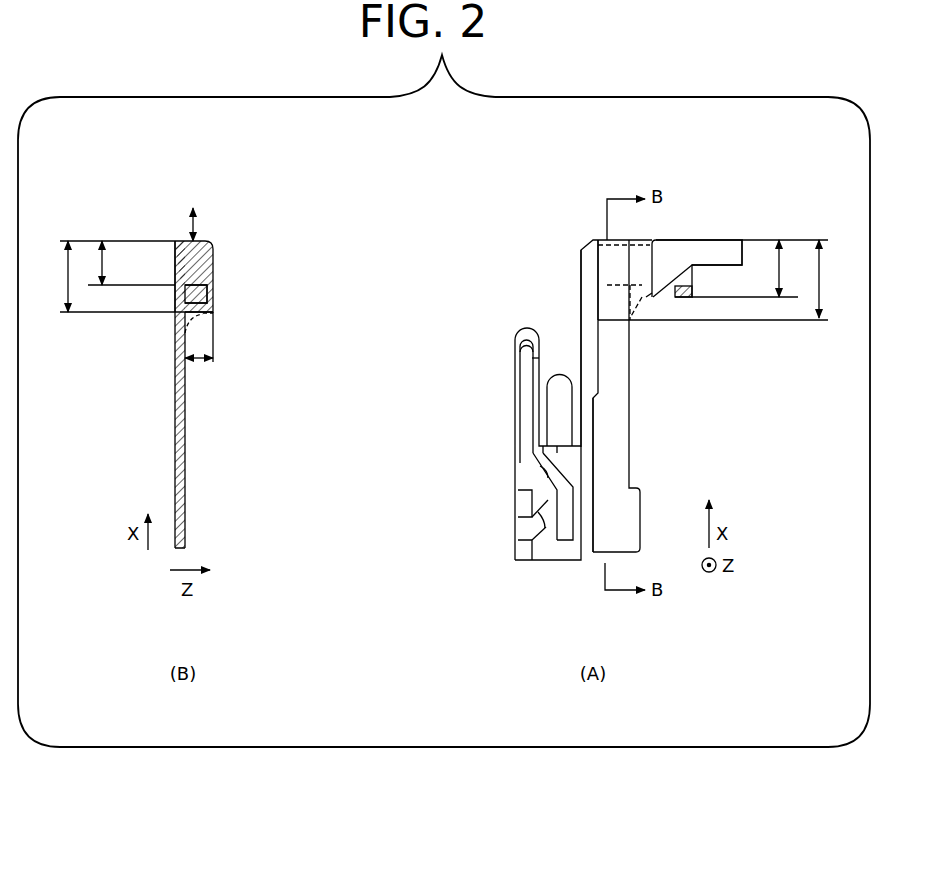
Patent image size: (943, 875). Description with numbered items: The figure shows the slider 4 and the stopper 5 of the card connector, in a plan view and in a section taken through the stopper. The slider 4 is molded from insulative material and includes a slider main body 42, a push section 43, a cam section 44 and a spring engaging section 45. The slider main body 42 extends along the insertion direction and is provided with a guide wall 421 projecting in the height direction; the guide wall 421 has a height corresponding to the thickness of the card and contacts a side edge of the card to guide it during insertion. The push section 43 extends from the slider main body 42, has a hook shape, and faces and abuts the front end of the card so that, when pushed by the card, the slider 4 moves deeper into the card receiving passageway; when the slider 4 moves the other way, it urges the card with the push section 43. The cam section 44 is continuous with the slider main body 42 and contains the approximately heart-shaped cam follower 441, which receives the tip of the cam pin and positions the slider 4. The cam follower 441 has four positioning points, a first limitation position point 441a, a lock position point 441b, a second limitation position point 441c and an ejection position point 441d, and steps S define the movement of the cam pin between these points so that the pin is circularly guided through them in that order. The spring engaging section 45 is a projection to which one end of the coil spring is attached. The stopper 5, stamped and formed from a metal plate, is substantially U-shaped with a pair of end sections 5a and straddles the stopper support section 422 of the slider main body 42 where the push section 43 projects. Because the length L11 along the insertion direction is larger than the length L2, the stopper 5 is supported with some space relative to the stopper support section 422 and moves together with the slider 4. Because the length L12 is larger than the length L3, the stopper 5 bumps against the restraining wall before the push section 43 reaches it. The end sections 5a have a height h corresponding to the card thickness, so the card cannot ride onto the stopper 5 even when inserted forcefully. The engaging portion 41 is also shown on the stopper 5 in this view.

In FIG. 2A, the slider 4 is at (551, 250).
In FIG. 2B, the slider 4 is at (156, 238).
In FIG. 2A, the stopper 5 is at (630, 240).
In FIG. 2B, the stopper 5 is at (214, 256).
In FIG. 2B, the end sections 5a is at (181, 248).
In FIG. 2A, the engaging portion 41 is at (695, 290).
In FIG. 2A, the slider main body 42 is at (629, 378).
In FIG. 2B, the slider main body 42 is at (185, 427).
In FIG. 2A, the guide wall 421 is at (593, 425).
In FIG. 2A, the stopper support section 422 is at (600, 237).
In FIG. 2B, the stopper support section 422 is at (214, 273).
In FIG. 2A, the push section 43 is at (700, 240).
In FIG. 2A, the cam section 44 is at (515, 443).
In FIG. 2A, the cam follower 441 is at (525, 432).
In FIG. 2A, the first limitation position point 441a is at (523, 548).
In FIG. 2A, the lock position point 441b is at (533, 505).
In FIG. 2A, the second limitation position point 441c is at (552, 525).
In FIG. 2A, the ejection position point 441d is at (520, 352).
In FIG. 2A, the spring engaging section 45 is at (563, 376).
In FIG. 2A, the steps S is at (532, 465).
In FIG. 2B, the length along the insertion direction L11 is at (122, 276).
In FIG. 2B, the length along the insertion direction L2 is at (124, 263).
In FIG. 2A, the length along the insertion direction L3 is at (751, 268).
In FIG. 2A, the length along the insertion direction L12 is at (802, 279).
In FIG. 2B, the height h is at (199, 348).